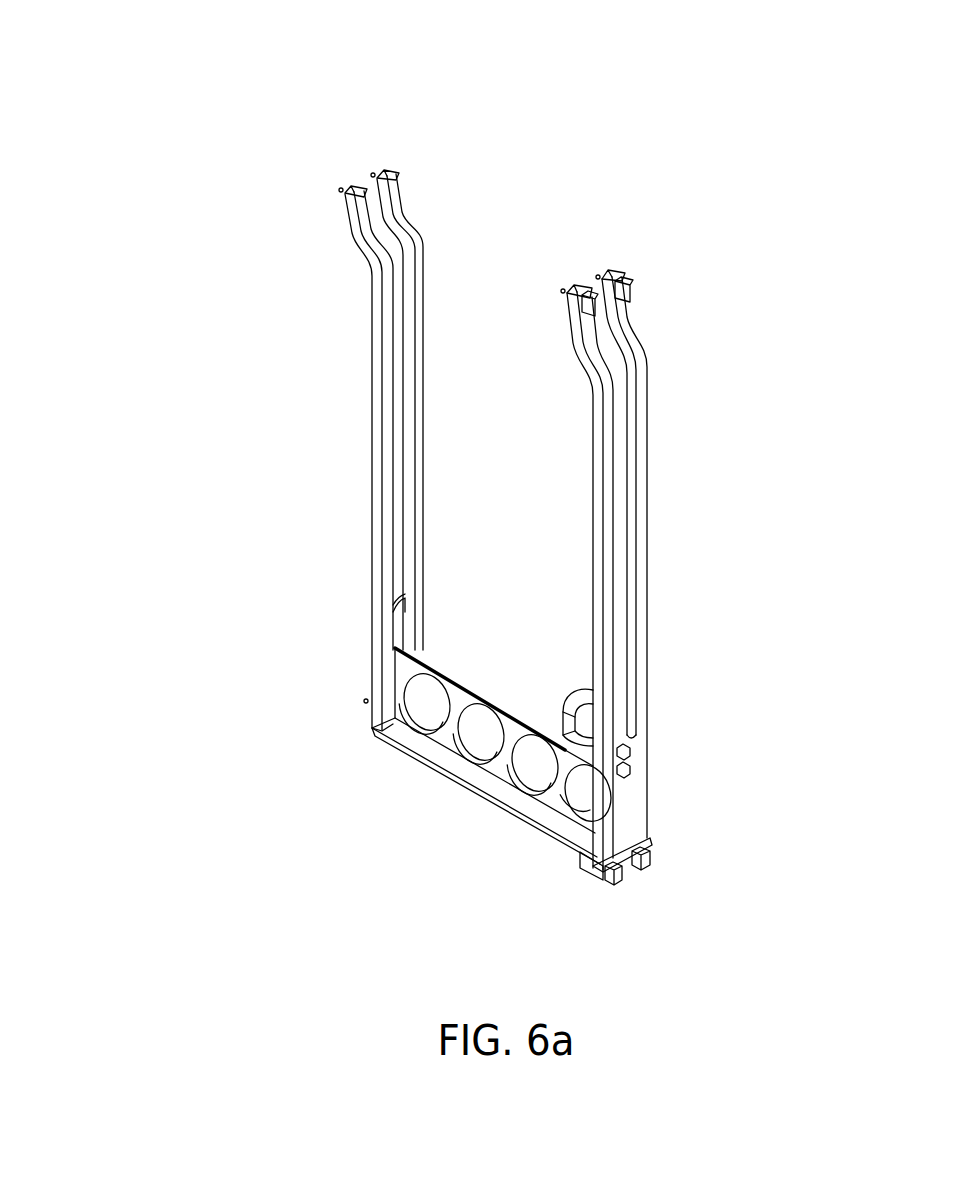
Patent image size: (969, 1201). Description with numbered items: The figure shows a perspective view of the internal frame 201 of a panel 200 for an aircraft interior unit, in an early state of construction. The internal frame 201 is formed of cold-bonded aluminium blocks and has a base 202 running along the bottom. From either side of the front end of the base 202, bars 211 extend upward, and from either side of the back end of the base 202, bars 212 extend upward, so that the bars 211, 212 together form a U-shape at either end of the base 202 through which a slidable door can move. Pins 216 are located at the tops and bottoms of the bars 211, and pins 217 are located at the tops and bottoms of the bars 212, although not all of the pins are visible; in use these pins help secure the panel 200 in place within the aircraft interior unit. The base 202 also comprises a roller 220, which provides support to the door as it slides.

The panel 200 is at (722, 125).
The internal frame 201 is at (690, 403).
The base 202 is at (485, 775).
The bars 211 is at (372, 530).
The bars 212 is at (637, 617).
The pins 216 is at (378, 172).
The pins 217 is at (603, 279).
The roller 220 is at (588, 698).